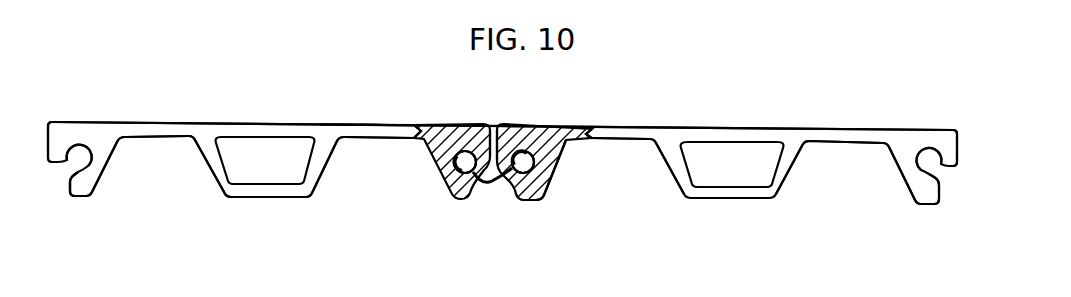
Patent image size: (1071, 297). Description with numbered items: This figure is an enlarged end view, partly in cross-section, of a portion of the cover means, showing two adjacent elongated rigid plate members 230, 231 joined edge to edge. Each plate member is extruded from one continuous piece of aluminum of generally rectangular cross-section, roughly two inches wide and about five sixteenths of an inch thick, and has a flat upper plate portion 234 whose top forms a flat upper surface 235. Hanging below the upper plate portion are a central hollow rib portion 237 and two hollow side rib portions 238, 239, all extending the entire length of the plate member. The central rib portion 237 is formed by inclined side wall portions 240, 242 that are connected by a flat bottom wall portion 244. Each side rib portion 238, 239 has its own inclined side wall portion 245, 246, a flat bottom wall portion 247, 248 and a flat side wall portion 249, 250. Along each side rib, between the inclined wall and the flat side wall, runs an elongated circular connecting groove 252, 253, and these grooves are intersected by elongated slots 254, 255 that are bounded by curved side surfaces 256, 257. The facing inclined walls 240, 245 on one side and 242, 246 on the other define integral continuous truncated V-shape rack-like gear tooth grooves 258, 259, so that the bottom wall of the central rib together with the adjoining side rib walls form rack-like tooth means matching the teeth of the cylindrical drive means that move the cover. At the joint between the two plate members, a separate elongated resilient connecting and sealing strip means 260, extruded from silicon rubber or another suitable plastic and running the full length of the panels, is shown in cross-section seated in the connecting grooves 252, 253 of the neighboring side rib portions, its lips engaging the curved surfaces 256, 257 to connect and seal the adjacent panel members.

The elongated rigid plate member 230 is at (270, 97).
The elongated rigid plate member 231 is at (737, 88).
The flat upper plate portion 234 is at (354, 133).
The flat upper surface 235 is at (383, 124).
The central hollow rib portion 237 is at (227, 197).
The hollow side rib portion 238 is at (87, 194).
The hollow side rib portion 239 is at (452, 188).
The inclined side wall portion 240 is at (685, 180).
The inclined side wall portion 242 is at (783, 178).
The flat bottom wall portion 244 is at (733, 201).
The inclined side wall portion 245 is at (553, 178).
The inclined side wall portion 246 is at (910, 170).
The flat bottom wall portion 247 is at (535, 201).
The flat bottom wall portion 248 is at (920, 203).
The flat side wall portion 249 is at (499, 152).
The flat side wall portion 250 is at (947, 136).
The elongated circular connecting groove 252 is at (80, 148).
The elongated circular connecting groove 253 is at (468, 148).
The elongated slot 254 is at (63, 174).
The elongated slot 255 is at (942, 173).
The curved side surface 256 is at (54, 158).
The curved side surface 257 is at (96, 186).
The truncated V-shape rack-like gear tooth groove 258 is at (178, 175).
The truncated V-shape rack-like gear tooth groove 259 is at (382, 173).
The resilient connecting and sealing strip means 260 is at (495, 203).